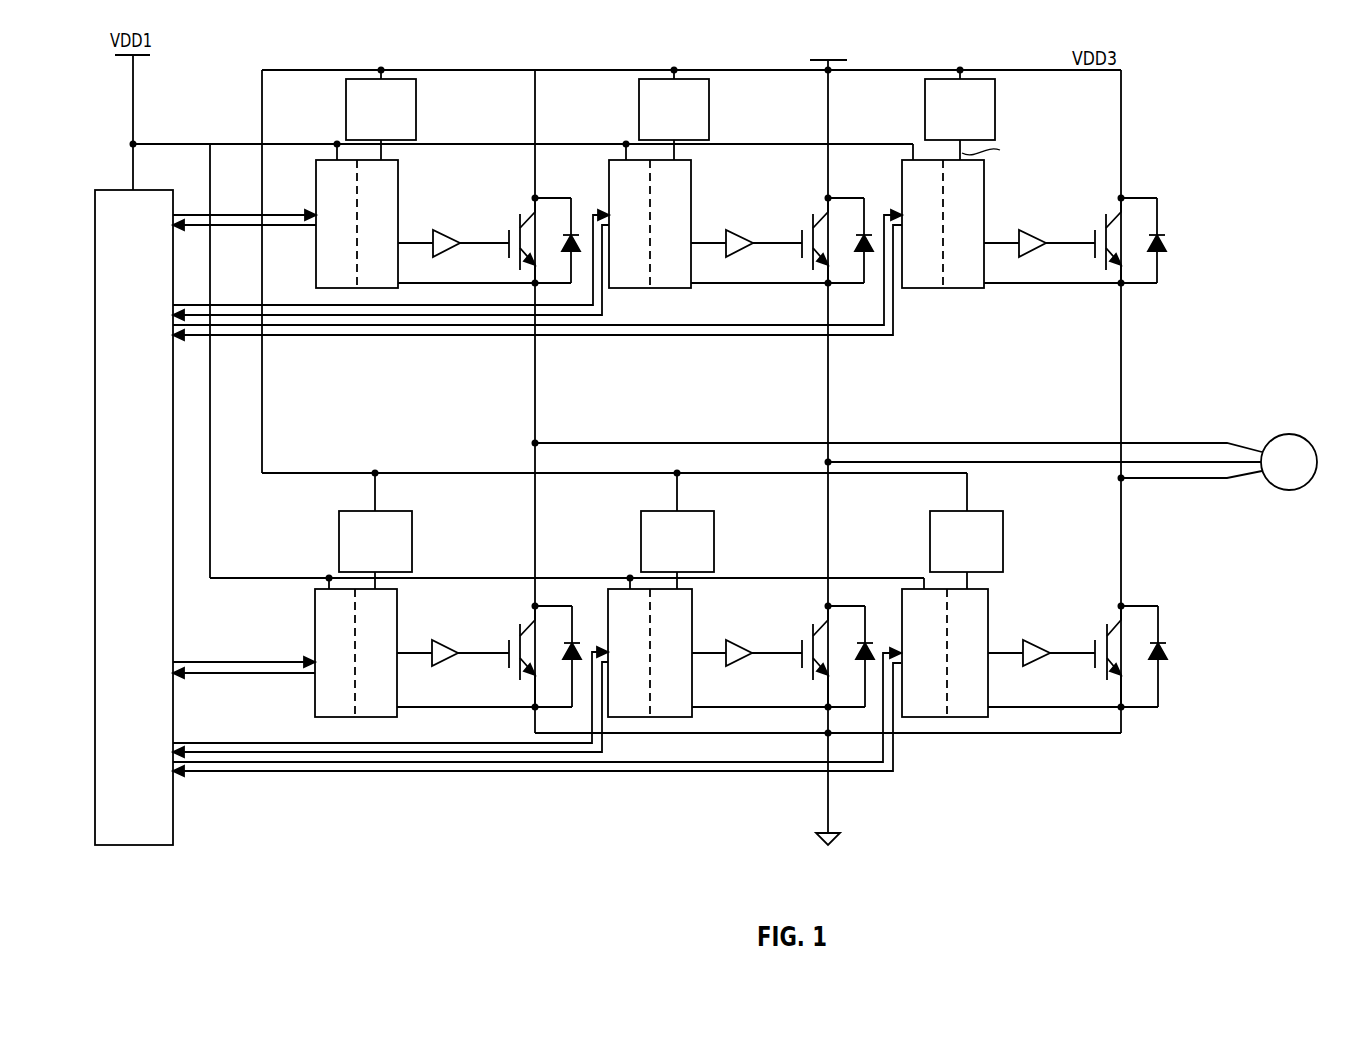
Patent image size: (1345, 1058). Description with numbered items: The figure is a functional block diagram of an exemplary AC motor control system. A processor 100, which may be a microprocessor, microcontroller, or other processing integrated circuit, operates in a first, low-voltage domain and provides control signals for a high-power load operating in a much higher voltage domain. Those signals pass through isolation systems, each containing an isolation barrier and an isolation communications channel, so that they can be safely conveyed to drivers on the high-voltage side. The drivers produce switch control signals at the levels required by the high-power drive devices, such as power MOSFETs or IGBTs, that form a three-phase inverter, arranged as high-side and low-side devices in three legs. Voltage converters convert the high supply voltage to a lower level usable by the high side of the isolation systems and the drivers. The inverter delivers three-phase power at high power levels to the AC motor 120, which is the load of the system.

The processor 100 is at (150, 529).
The AC motor 120 is at (1293, 434).